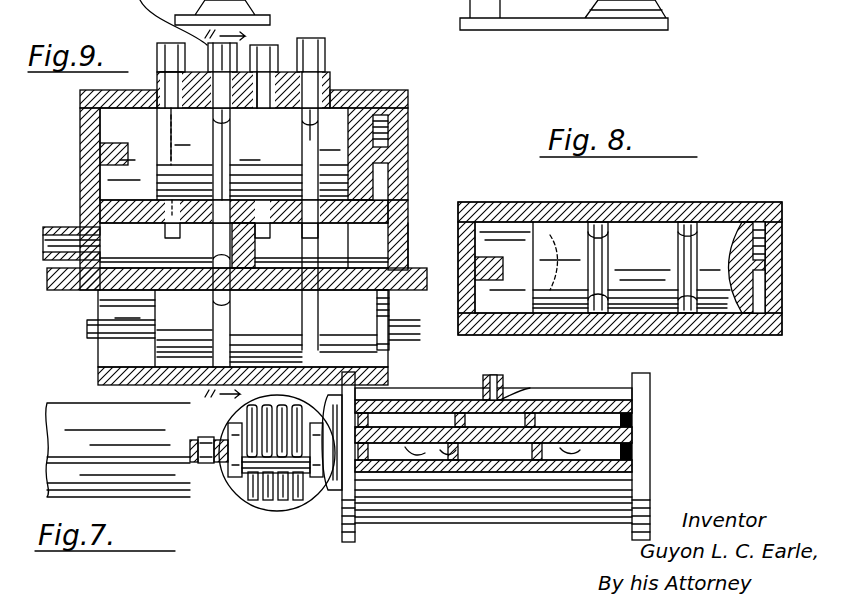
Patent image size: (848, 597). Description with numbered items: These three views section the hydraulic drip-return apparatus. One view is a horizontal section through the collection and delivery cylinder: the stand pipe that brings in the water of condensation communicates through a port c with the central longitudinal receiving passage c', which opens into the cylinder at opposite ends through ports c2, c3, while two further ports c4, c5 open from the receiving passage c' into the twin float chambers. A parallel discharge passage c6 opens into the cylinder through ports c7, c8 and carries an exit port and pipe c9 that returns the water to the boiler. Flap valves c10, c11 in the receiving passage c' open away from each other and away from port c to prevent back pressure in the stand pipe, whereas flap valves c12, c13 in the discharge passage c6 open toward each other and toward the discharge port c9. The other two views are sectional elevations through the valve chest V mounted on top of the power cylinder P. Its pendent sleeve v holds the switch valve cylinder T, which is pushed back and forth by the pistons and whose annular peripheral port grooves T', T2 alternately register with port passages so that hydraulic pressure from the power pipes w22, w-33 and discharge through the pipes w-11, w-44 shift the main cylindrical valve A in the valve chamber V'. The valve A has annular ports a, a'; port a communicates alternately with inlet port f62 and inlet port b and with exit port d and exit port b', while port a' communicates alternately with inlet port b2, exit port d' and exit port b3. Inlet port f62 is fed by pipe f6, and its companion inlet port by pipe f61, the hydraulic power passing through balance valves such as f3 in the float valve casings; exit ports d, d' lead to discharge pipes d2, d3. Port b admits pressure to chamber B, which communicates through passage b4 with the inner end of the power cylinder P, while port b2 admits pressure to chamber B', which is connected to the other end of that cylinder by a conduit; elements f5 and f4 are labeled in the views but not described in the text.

In FIG. 9, the pipe f6 is at (160, 75).
In FIG. 7, the pipe f6 is at (271, 402).
In FIG. 9, the discharge pipe d3 is at (262, 55).
In FIG. 7, the discharge pipe d3 is at (282, 403).
In FIG. 9, the pipe f61 is at (316, 42).
In FIG. 7, the pipe f61 is at (298, 403).
In FIG. 9, the inlet port f62 is at (318, 100).
In FIG. 9, the valve chamber V' is at (276, 143).
In FIG. 8, the valve chamber V' is at (504, 267).
In FIG. 7, the valve chamber V' is at (215, 437).
In FIG. 9, the annular port a' is at (181, 156).
In FIG. 9, the exit port d' is at (231, 205).
In FIG. 9, the exit port d is at (273, 103).
In FIG. 9, the annular port a is at (331, 162).
In FIG. 9, the main cylindrical valve A is at (266, 171).
In FIG. 8, the main cylindrical valve A is at (652, 267).
In FIG. 9, the pipe f5 is at (62, 240).
In FIG. 7, the pipe f5 is at (132, 425).
In FIG. 9, the chamber B' is at (156, 251).
In FIG. 9, the inlet port b2 is at (172, 225).
In FIG. 9, the exit port b3 is at (216, 225).
In FIG. 9, the exit port b' is at (264, 241).
In FIG. 9, the inlet port b is at (306, 242).
In FIG. 9, the chamber B is at (321, 250).
In FIG. 9, the passage b4 is at (392, 268).
In FIG. 9, the valve chest V is at (391, 233).
In FIG. 7, the valve chest V is at (309, 414).
In FIG. 9, the balance valve f3 is at (85, 325).
In FIG. 9, the pendent sleeve v is at (127, 332).
In FIG. 9, the annular peripheral port groove T' is at (184, 339).
In FIG. 8, the annular peripheral port groove T' is at (570, 267).
In FIG. 9, the switch valve cylinder T is at (266, 342).
In FIG. 9, the annular peripheral port groove T2 is at (312, 322).
In FIG. 8, the annular peripheral port groove T2 is at (690, 258).
In FIG. 9, the pipe f4 is at (408, 320).
In FIG. 7, the power cylinder P is at (110, 450).
In FIG. 7, the discharge pipe w-11 is at (231, 510).
In FIG. 7, the power pipe w22 is at (266, 510).
In FIG. 7, the power pipe w-33 is at (295, 526).
In FIG. 7, the discharge pipe w-44 is at (315, 512).
In FIG. 7, the discharge pipe d2 is at (268, 403).
In FIG. 7, the central longitudinal passage c' is at (531, 378).
In FIG. 7, the port c8 is at (633, 415).
In FIG. 7, the port c3 is at (633, 455).
In FIG. 7, the port c7 is at (370, 420).
In FIG. 7, the flap valve c13 is at (530, 417).
In FIG. 7, the longitudinal passage c6 is at (575, 418).
In FIG. 7, the port c2 is at (363, 462).
In FIG. 7, the port c is at (459, 502).
In FIG. 7, the flap valve c11 is at (515, 501).
In FIG. 7, the port c4 is at (422, 452).
In FIG. 7, the flap valve c10 is at (450, 458).
In FIG. 7, the port c5 is at (580, 458).
In FIG. 7, the flap valve c12 is at (466, 413).
In FIG. 7, the exit port and pipe c9 is at (502, 403).